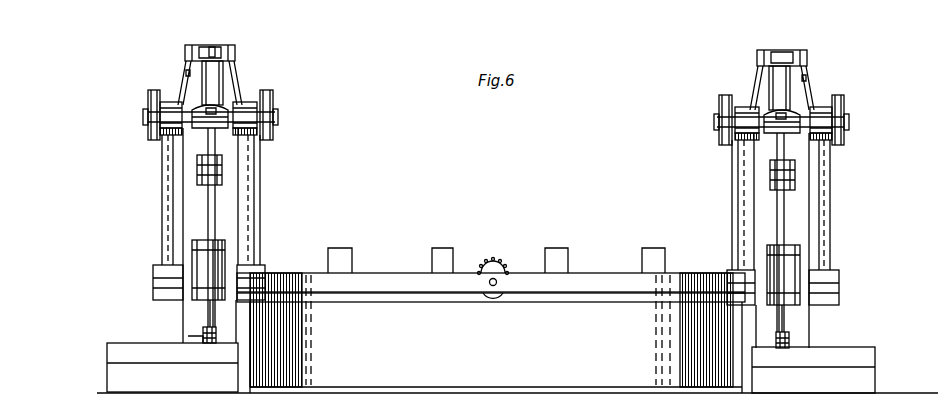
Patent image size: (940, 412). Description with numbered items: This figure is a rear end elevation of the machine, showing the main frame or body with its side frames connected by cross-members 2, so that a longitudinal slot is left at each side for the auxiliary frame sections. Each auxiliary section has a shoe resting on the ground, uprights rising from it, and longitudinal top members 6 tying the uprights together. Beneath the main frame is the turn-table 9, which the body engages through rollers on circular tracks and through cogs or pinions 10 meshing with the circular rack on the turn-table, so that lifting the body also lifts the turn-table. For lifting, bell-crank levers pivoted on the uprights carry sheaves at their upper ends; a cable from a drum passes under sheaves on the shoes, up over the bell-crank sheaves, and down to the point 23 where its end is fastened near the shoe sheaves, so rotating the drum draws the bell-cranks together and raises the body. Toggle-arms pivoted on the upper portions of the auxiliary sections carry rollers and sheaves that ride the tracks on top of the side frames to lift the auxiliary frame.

The cross-members 2 is at (147, 391).
The longitudinal top members 6 is at (212, 47).
The turn-table 9 is at (622, 385).
The cogs or pinions 10 is at (497, 262).
The point 23 is at (192, 340).